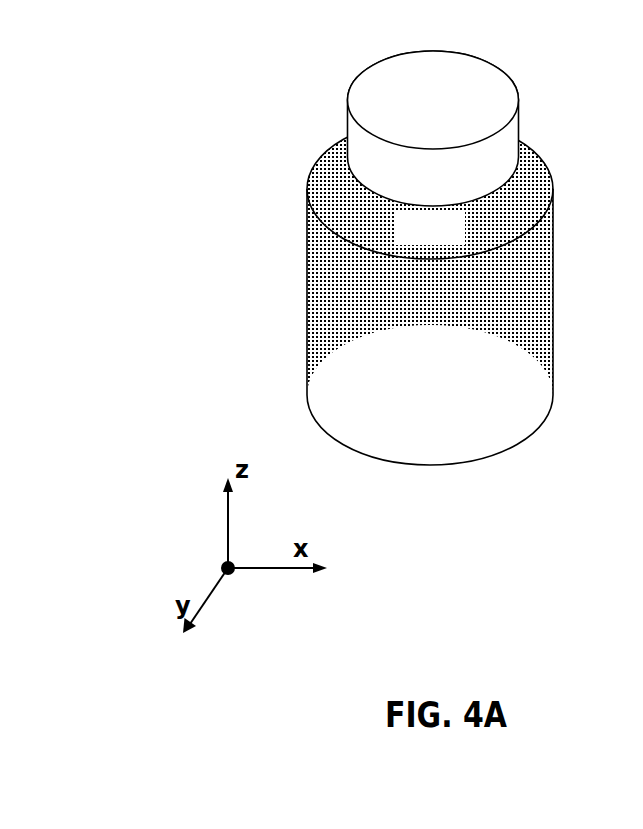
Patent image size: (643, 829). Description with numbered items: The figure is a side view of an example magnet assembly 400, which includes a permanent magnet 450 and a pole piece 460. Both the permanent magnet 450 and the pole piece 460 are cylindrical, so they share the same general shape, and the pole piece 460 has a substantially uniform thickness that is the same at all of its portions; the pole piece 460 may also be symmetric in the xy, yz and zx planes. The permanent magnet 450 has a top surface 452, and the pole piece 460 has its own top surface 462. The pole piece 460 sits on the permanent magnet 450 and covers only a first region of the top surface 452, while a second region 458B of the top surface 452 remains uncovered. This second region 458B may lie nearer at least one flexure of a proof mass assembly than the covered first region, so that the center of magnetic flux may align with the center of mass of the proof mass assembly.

The magnet assembly 400 is at (245, 88).
The permanent magnet 450 is at (467, 292).
The top surface 452 is at (467, 189).
The second region 458B is at (452, 238).
The pole piece 460 is at (450, 124).
The top surface 462 is at (480, 77).